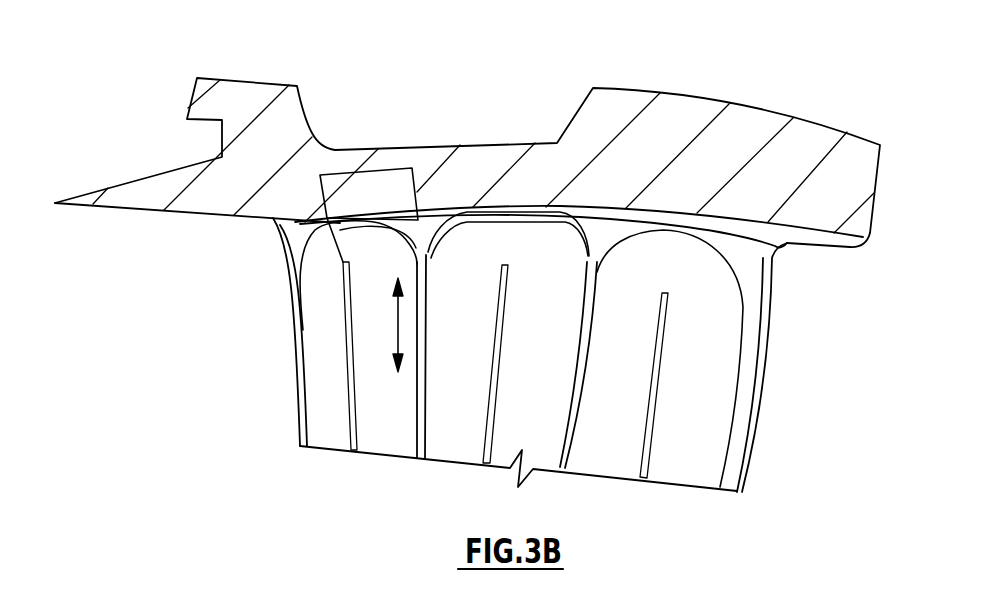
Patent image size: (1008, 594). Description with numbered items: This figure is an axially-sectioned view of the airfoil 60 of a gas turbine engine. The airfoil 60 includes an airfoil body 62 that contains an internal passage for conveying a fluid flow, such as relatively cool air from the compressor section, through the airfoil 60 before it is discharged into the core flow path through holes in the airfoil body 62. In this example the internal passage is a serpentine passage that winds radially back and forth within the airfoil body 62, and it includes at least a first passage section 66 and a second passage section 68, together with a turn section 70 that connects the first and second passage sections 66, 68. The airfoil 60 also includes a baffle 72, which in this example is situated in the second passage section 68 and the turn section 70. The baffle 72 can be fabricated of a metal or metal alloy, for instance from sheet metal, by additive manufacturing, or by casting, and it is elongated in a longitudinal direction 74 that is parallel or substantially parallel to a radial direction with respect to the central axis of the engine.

The airfoil 60 is at (757, 308).
The airfoil body 62 is at (747, 377).
The first passage section 66 is at (322, 373).
The second passage section 68 is at (370, 415).
The turn section 70 is at (352, 240).
The baffle 72 is at (401, 188).
The longitudinal direction 74 is at (397, 325).